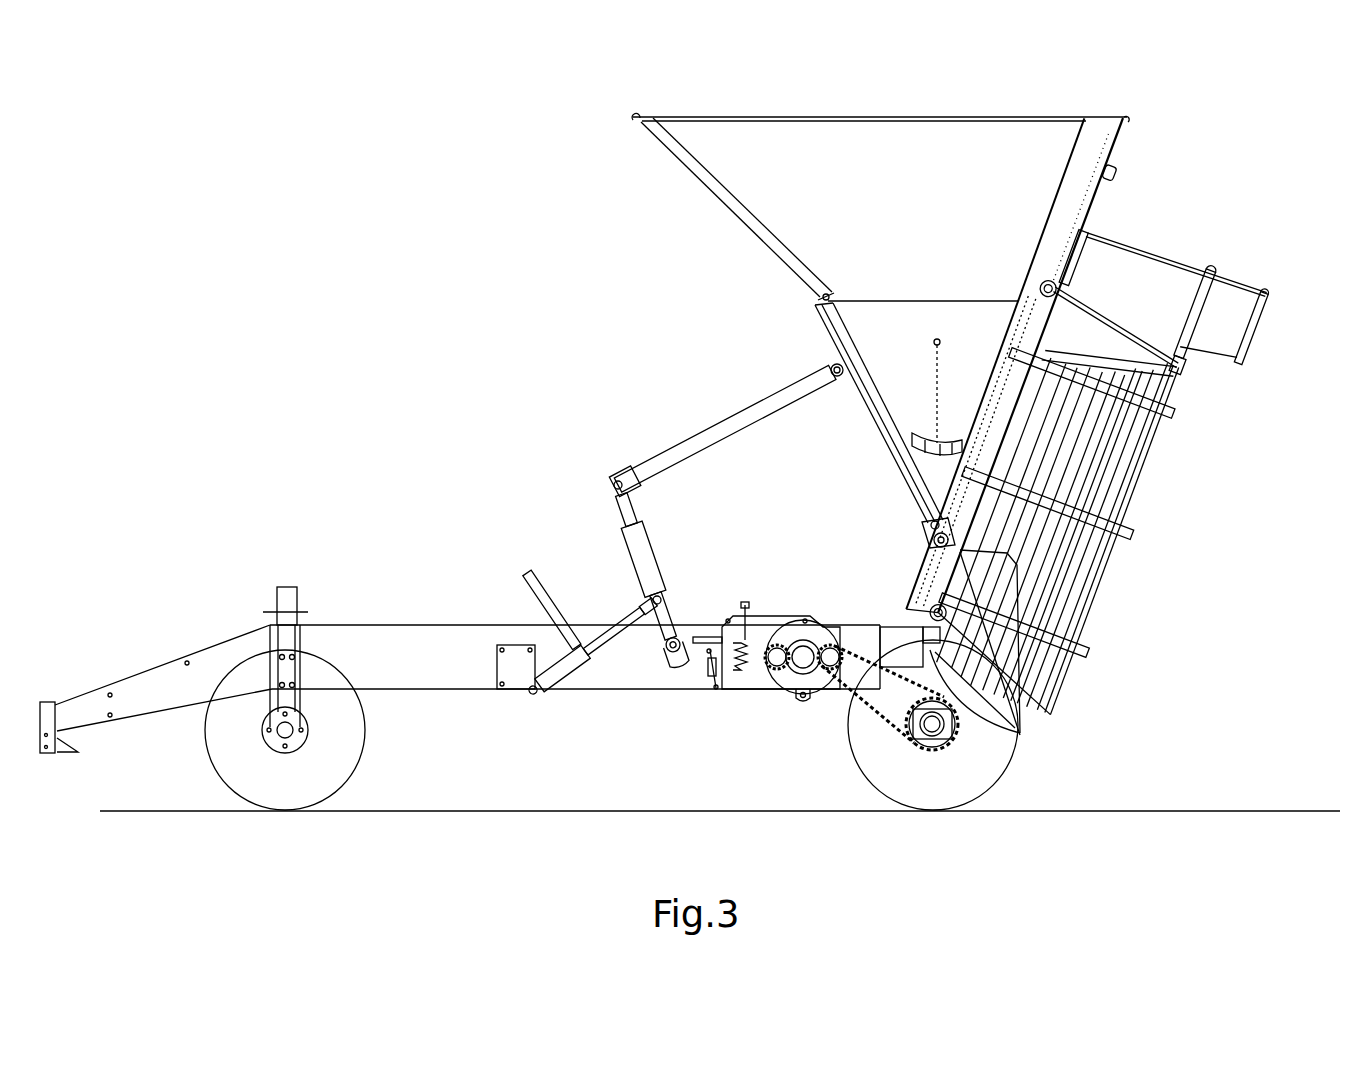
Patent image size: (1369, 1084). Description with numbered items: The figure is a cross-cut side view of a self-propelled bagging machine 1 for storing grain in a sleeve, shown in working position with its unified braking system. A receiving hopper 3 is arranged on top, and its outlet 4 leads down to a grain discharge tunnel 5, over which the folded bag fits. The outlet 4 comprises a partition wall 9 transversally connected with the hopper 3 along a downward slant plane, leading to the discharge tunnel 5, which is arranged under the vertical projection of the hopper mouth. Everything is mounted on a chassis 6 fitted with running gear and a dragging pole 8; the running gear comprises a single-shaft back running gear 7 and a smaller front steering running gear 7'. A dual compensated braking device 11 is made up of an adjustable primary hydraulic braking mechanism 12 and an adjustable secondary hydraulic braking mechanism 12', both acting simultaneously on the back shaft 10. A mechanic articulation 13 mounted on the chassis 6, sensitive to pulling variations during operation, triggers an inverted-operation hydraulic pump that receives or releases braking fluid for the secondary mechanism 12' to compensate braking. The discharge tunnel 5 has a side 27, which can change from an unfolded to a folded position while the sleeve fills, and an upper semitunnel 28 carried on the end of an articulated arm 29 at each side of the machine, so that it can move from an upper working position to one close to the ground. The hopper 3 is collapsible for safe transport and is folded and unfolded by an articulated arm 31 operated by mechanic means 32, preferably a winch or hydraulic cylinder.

The self-propelled bagging machine 1 is at (720, 527).
The receiving hopper 3 is at (718, 158).
The outlet 4 is at (933, 463).
The grain discharge tunnel 5 is at (1107, 425).
The chassis 6 is at (455, 658).
The back running gear 7 is at (940, 754).
The front steering running gear 7' is at (304, 765).
The dragging pole 8 is at (140, 695).
The partition wall 9 is at (865, 403).
The back shaft 10 is at (935, 742).
The dual compensated braking device 11 is at (795, 685).
The primary hydraulic braking mechanism 12 is at (814, 708).
The secondary hydraulic braking mechanism 12' is at (751, 695).
The mechanic articulation 13 is at (716, 692).
The side 27 is at (1103, 573).
The semitunnel 28 is at (1142, 272).
The articulated arm 29 is at (1177, 360).
The articulated arm 31 is at (648, 465).
The mechanic means 32 is at (548, 597).